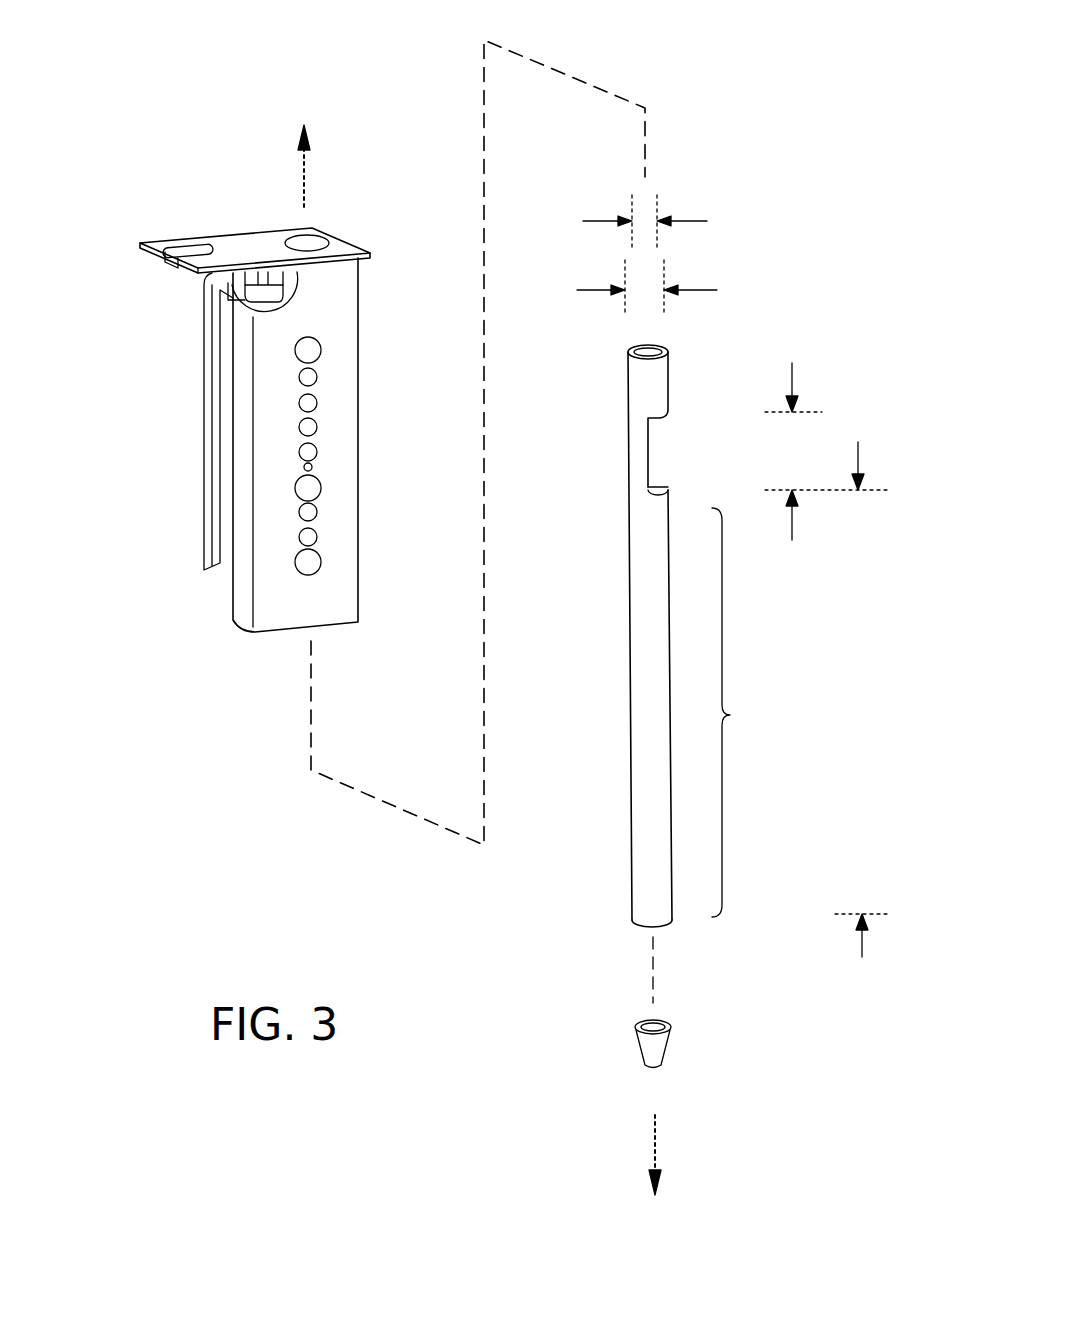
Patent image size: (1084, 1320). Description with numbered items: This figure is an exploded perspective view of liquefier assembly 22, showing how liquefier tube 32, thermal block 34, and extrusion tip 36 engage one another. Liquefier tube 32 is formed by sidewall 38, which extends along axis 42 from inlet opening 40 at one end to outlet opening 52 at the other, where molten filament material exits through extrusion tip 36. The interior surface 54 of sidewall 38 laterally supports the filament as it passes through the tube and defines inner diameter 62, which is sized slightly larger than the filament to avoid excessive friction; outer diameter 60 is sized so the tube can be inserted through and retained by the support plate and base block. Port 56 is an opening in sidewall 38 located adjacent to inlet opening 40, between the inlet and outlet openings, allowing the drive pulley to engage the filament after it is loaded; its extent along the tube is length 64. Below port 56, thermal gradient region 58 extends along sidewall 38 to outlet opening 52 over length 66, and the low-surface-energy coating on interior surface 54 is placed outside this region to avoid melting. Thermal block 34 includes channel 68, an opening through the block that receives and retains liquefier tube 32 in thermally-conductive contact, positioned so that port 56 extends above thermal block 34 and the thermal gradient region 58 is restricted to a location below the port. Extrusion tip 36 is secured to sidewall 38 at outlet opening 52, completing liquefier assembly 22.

The liquefier assembly 22 is at (175, 754).
The liquefier tube 32 is at (734, 661).
The thermal block 34 is at (228, 438).
The extrusion tip 36 is at (661, 1040).
The sidewall 38 is at (636, 562).
The inlet opening 40 is at (660, 338).
The axis 42 is at (303, 163).
The outlet opening 52 is at (643, 932).
The interior surface 54 is at (654, 487).
The port 56 is at (680, 428).
The thermal gradient region 58 is at (739, 712).
The outer diameter 60 is at (697, 290).
The inner diameter 62 is at (693, 221).
The length 64 is at (794, 380).
The length 66 is at (860, 455).
The channel 68 is at (297, 236).